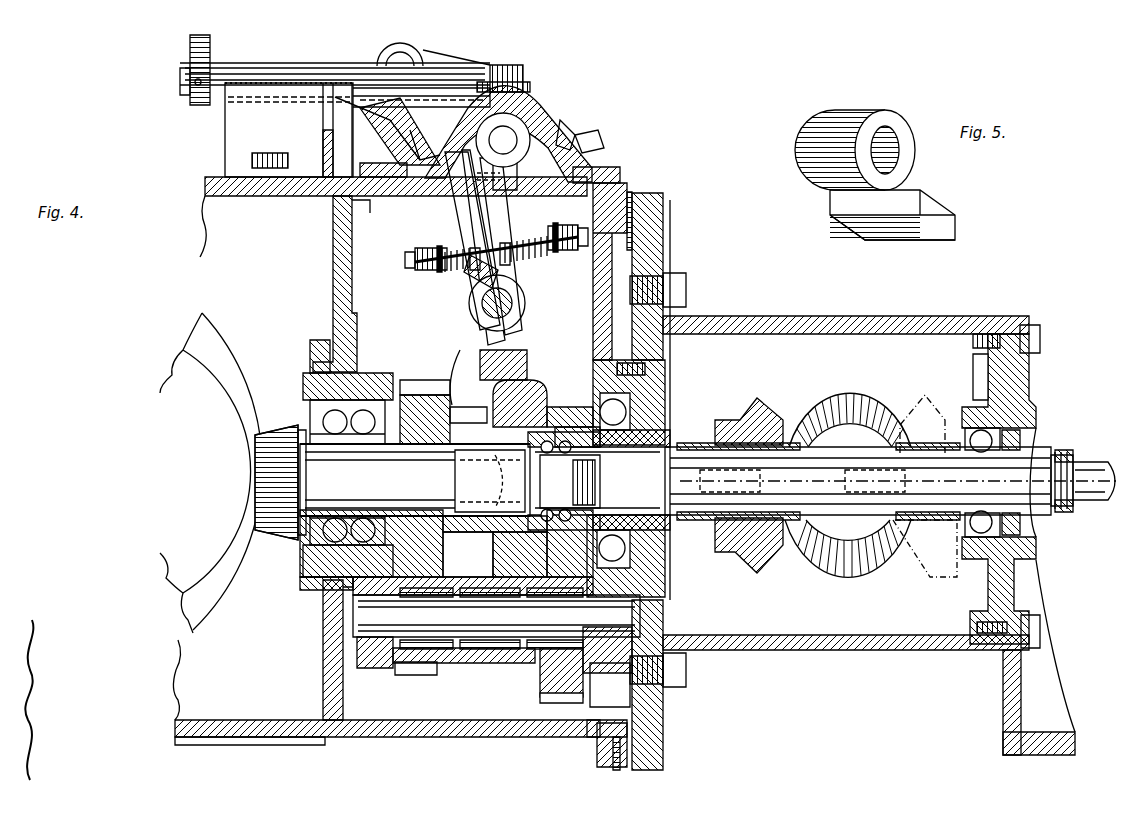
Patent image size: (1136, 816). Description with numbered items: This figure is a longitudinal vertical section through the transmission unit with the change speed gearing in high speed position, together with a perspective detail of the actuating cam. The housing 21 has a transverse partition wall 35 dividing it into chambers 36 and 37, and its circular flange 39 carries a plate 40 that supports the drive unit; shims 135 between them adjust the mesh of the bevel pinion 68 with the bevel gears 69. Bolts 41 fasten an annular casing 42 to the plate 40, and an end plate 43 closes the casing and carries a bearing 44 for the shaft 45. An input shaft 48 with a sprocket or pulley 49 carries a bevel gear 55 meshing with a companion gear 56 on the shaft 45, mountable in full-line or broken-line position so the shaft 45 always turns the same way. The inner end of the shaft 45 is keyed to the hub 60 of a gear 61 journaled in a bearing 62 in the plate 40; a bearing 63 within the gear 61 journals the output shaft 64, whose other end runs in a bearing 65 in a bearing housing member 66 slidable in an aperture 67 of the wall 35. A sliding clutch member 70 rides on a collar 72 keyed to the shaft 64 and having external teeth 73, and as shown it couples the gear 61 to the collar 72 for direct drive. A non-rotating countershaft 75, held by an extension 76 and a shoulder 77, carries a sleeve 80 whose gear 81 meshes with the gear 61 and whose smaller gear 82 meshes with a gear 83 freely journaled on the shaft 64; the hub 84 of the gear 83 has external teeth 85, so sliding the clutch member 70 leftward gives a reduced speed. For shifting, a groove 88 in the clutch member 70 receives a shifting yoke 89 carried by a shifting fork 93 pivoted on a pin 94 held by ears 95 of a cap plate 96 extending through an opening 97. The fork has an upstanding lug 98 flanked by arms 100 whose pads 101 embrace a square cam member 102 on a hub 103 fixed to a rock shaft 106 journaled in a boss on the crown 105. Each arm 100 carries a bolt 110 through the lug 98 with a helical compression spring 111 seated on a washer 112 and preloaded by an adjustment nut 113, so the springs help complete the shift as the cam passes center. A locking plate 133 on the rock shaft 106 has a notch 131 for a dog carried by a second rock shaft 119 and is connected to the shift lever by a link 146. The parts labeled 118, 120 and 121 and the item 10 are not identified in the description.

In FIG. 4, the housing 21 is at (258, 196).
In FIG. 4, the transverse partition wall 35 is at (333, 277).
In FIG. 4, the chamber 36 is at (269, 223).
In FIG. 4, the chamber 37 is at (370, 252).
In FIG. 4, the circular flange 39 is at (597, 748).
In FIG. 4, the plate 40 is at (663, 207).
In FIG. 4, the bolts 41 is at (680, 280).
In FIG. 4, the annular casing 42 is at (856, 318).
In FIG. 4, the end plate 43 is at (1032, 385).
In FIG. 4, the ball bearing 44 is at (955, 557).
In FIG. 4, the shaft 45 is at (1060, 435).
In FIG. 4, the input shaft 48 is at (323, 628).
In FIG. 4, the sprocket or pulley 49 is at (447, 650).
In FIG. 4, the bevel gear 55 is at (838, 393).
In FIG. 4, the companion gear 56 is at (755, 398).
In FIG. 4, the hub 60 is at (667, 428).
In FIG. 4, the gear 61 is at (562, 407).
In FIG. 4, the ball bearing 62 is at (667, 392).
In FIG. 4, the ball bearing 63 is at (564, 481).
In FIG. 4, the output shaft 64 is at (480, 480).
In FIG. 4, the ball bearing 65 is at (375, 373).
In FIG. 4, the bearing housing member 66 is at (306, 373).
In FIG. 4, the aperture 67 is at (330, 368).
In FIG. 4, the bevel pinion 68 is at (262, 478).
In FIG. 4, the bevel gears 69 is at (228, 390).
In FIG. 4, the sliding clutch member 70 is at (545, 395).
In FIG. 4, the collar 72 is at (490, 481).
In FIG. 4, the external teeth 73 is at (472, 405).
In FIG. 4, the countershaft 75 is at (577, 608).
In FIG. 4, the extension 76 is at (378, 668).
In FIG. 4, the shoulder 77 is at (496, 616).
In FIG. 4, the sleeve 80 is at (493, 660).
In FIG. 4, the gear 81 is at (550, 690).
In FIG. 4, the smaller gear 82 is at (415, 677).
In FIG. 4, the gear 83 is at (416, 385).
In FIG. 4, the hub 84 is at (450, 502).
In FIG. 4, the external teeth 85 is at (442, 366).
In FIG. 4, the exterior circumferential groove 88 is at (500, 608).
In FIG. 4, the shifting yoke 89 is at (520, 372).
In FIG. 4, the shifting fork 93 is at (522, 338).
In FIG. 4, the pin 94 is at (516, 303).
In FIG. 4, the ears 95 is at (452, 200).
In FIG. 4, the cap plate 96 is at (606, 172).
In FIG. 4, the opening 97 is at (395, 148).
In FIG. 4, the upstanding lug 98 is at (490, 263).
In FIG. 4, the arm 100 is at (465, 228).
In FIG. 4, the pads 101 is at (360, 138).
In FIG. 4, the square cam member 102 is at (480, 180).
In FIG. 5, the square cam member 102 is at (956, 212).
In FIG. 4, the hub 103 is at (478, 135).
In FIG. 5, the hub 103 is at (842, 112).
In FIG. 4, the crown 105 is at (592, 142).
In FIG. 4, the rock shaft 106 is at (520, 130).
In FIG. 4, the bolt 110 is at (418, 263).
In FIG. 4, the helical compression spring 111 is at (447, 270).
In FIG. 4, the washers 112 is at (430, 248).
In FIG. 4, the adjustment nuts 113 is at (410, 252).
In FIG. 4, the bolt head 118 is at (190, 50).
In FIG. 4, the rock shaft 119 is at (182, 82).
In FIG. 4, the rod 120 is at (297, 53).
In FIG. 4, the spring housing 121 is at (289, 130).
In FIG. 4, the notch 131 is at (573, 128).
In FIG. 4, the locking plate 133 is at (447, 62).
In FIG. 4, the shims 135 is at (636, 198).
In FIG. 4, the link 146 is at (340, 130).
In FIG. 4, the inventors signature 10 is at (77, 717).